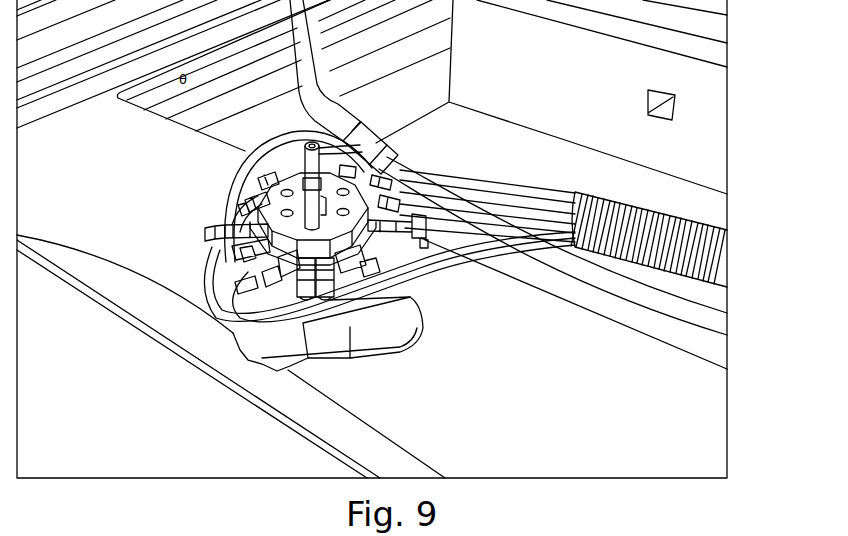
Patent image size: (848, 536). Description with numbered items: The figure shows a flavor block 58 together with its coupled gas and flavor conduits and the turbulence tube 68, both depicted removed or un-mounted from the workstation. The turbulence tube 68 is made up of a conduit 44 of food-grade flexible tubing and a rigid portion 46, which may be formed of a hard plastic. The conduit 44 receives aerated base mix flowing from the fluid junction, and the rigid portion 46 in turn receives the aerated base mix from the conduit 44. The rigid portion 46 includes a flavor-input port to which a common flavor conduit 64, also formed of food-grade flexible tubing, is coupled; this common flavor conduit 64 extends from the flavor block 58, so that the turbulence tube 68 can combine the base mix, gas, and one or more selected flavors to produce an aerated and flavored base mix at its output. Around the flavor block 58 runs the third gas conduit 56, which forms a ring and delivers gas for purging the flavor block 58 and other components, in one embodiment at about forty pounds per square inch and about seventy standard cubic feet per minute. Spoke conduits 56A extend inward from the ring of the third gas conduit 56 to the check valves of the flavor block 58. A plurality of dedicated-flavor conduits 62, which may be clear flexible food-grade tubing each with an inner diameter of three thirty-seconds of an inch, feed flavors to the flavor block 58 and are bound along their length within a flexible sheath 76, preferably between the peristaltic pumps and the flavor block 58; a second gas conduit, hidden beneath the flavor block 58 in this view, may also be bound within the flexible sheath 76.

The conduit 44 is at (538, 262).
The rigid portion 46 is at (308, 88).
The third gas conduit 56 is at (207, 247).
The spoke conduits 56A is at (250, 300).
The flavor block 58 is at (245, 205).
The dedicated-flavor conduits 62 is at (283, 140).
The common flavor conduit 64 is at (384, 148).
The turbulence tube 68 is at (378, 124).
The flexible sheath 76 is at (640, 250).